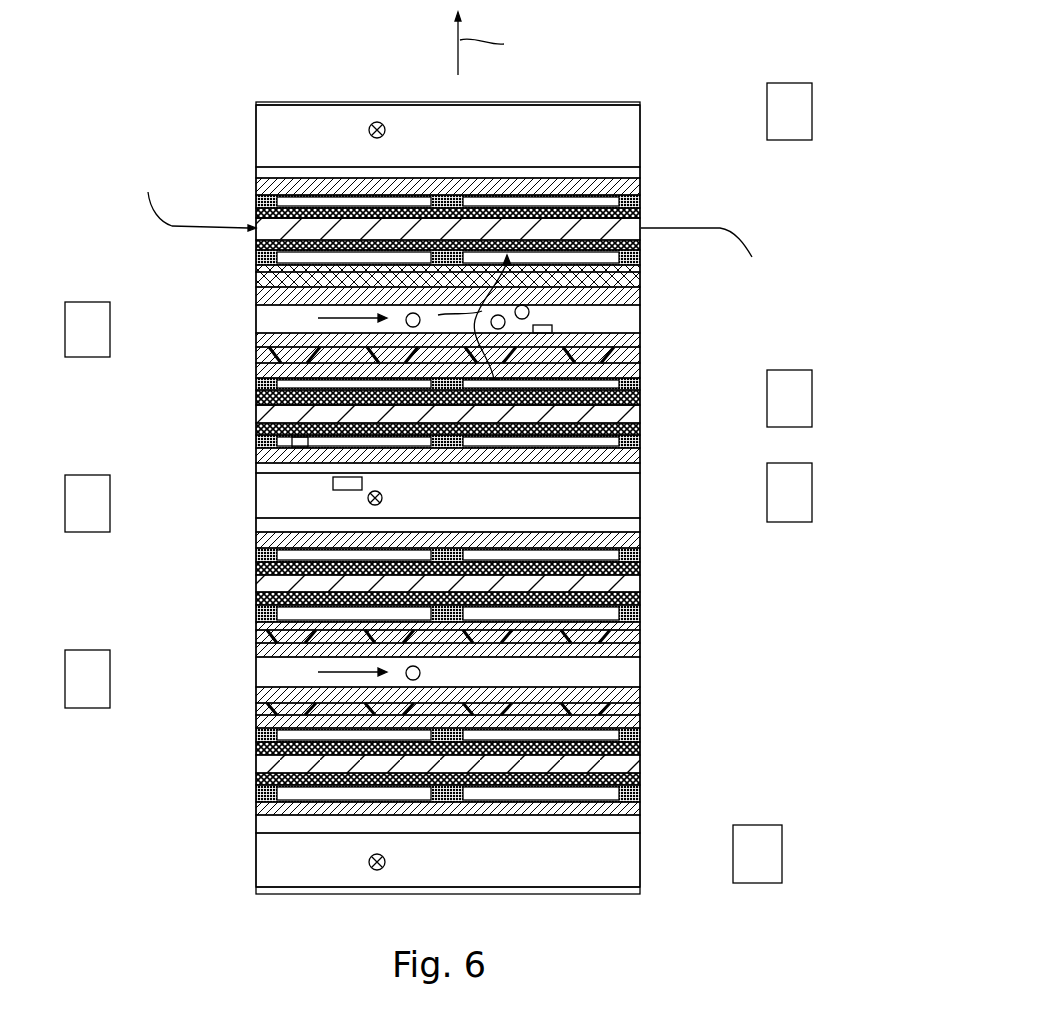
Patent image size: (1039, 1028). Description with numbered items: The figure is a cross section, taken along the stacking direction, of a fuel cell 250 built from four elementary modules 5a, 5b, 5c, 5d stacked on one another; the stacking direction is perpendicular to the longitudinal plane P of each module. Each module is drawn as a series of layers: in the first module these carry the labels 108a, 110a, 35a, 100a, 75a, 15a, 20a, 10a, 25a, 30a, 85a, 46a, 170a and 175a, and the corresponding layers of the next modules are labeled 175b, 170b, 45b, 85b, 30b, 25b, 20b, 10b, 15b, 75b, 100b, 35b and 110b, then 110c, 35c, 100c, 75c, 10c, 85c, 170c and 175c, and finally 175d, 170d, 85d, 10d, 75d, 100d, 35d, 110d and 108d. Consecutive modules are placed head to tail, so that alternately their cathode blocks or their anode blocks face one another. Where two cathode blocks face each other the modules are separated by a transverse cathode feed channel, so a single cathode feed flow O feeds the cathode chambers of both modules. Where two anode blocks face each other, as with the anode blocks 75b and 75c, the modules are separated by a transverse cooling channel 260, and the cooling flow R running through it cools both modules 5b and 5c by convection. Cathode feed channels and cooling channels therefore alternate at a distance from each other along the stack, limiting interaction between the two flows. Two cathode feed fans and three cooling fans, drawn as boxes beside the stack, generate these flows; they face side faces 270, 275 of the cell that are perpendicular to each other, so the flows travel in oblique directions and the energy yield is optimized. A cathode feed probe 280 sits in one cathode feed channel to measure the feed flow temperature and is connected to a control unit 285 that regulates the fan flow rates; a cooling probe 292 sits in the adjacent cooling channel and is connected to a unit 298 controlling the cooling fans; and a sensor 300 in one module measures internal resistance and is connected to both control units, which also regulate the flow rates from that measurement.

The fuel cell 250 is at (230, 73).
The side face 275 is at (557, 895).
The top layer 108a is at (641, 150).
The bottom layer 108d is at (641, 838).
The elementary module 5a is at (452, 223).
The elementary module 5b is at (456, 405).
The elementary module 5c is at (451, 576).
The elementary module 5d is at (451, 756).
The layer 110a is at (641, 172).
The layer 110b is at (641, 470).
The layer 110c is at (641, 522).
The layer 110d is at (641, 825).
The substrate 35a is at (641, 188).
The substrate 35b is at (641, 452).
The substrate 35c is at (641, 540).
The substrate 35d is at (641, 807).
The electrode 100a is at (614, 201).
The electrode 100b is at (614, 441).
The electrode 100c is at (256, 556).
The electrode 100d is at (256, 794).
The contact layer 75a is at (457, 173).
The anode block 75b is at (457, 438).
The anode block 75c is at (403, 542).
The contact layer 75d is at (403, 815).
The first semiconductor layer 15a is at (256, 207).
The first semiconductor layer 15b is at (256, 428).
The second layer 20a is at (256, 218).
The second layer 20b is at (256, 404).
The active layer 10a is at (256, 238).
The active layer 10b is at (256, 413).
The active layer 10c is at (256, 586).
The active layer 10d is at (256, 764).
The semiconductor layer 25a is at (256, 253).
The semiconductor layer 25b is at (256, 392).
The layer 30a is at (451, 281).
The layer 30b is at (408, 357).
The electrode 85a is at (614, 257).
The electrode 85b is at (614, 384).
The electrode 85c is at (614, 613).
The electrode 85d is at (614, 735).
The layer 46a is at (641, 282).
The layer 45b is at (256, 366).
The layer 170a is at (641, 300).
The layer 170b is at (641, 350).
The layer 170c is at (641, 637).
The layer 170d is at (256, 710).
The layer 175a is at (256, 297).
The layer 175b is at (641, 333).
The layer 175c is at (641, 652).
The layer 175d is at (641, 695).
The cooling channel 260 is at (641, 497).
The side face 270 is at (256, 627).
The cathode feed probe 280 is at (553, 330).
The cooling probe 292 is at (362, 483).
The sensor 300 is at (293, 447).
The control unit 285 is at (80, 520).
The cooling fan control unit 298 is at (782, 380).